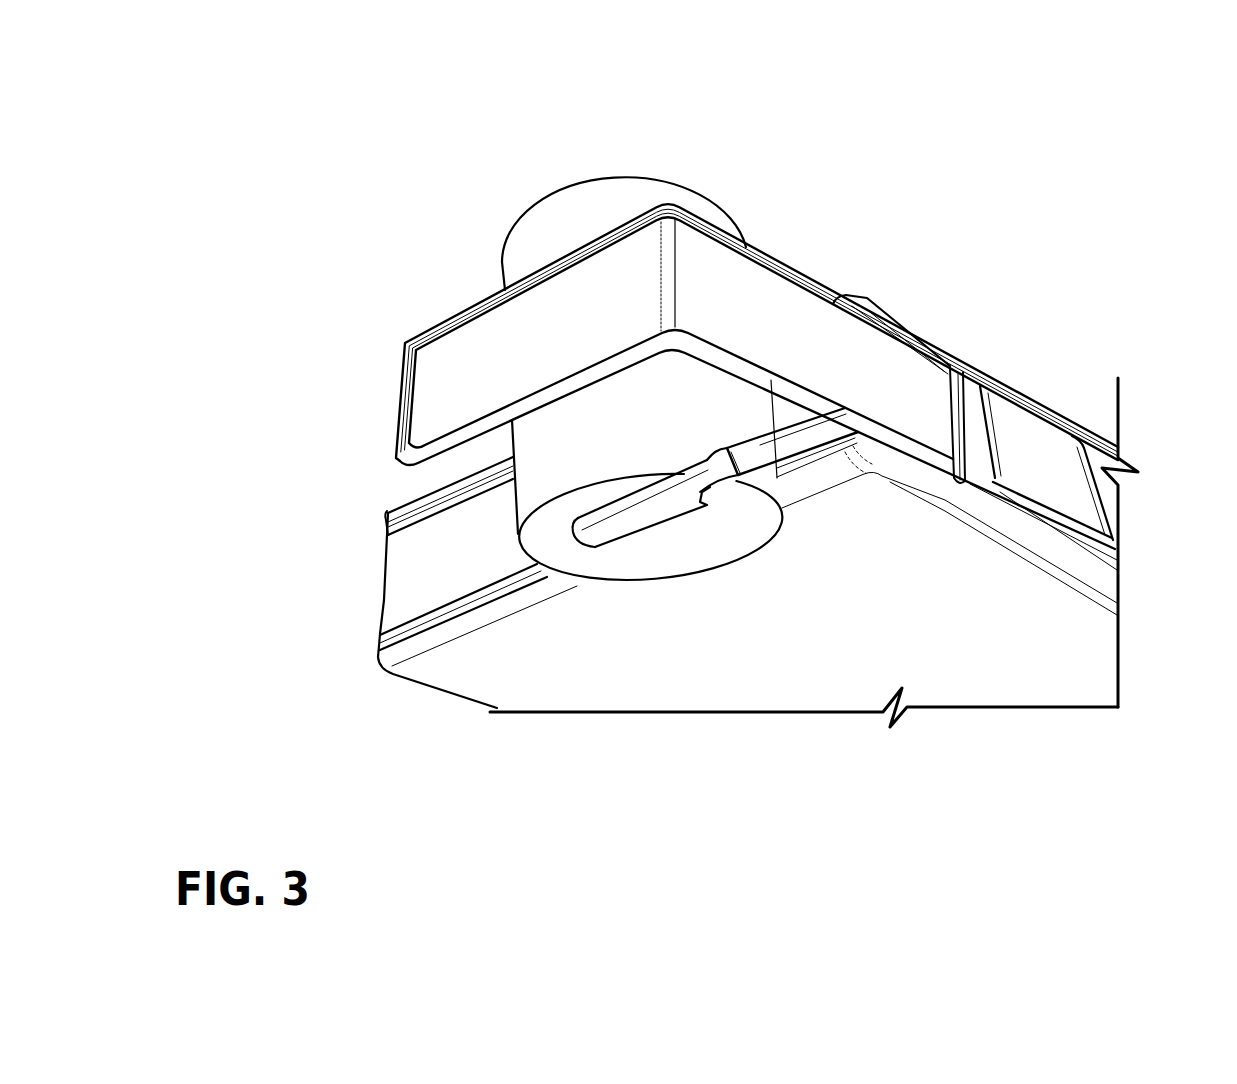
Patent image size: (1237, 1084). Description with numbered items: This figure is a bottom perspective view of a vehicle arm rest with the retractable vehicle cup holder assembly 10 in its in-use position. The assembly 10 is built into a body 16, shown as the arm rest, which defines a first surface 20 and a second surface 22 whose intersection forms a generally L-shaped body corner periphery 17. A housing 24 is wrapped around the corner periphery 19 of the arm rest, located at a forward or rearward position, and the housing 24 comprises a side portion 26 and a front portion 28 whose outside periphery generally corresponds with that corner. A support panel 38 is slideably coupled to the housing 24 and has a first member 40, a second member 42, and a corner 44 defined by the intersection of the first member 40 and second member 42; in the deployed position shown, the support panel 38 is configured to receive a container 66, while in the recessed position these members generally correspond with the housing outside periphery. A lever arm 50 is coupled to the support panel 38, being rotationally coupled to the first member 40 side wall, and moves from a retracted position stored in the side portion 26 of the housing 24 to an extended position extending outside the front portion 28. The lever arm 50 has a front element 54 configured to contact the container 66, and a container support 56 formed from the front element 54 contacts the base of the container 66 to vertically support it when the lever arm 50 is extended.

The vehicle cup holder assembly 10 is at (801, 191).
The body 16 is at (1090, 673).
The body corner periphery 17 is at (928, 455).
The corner periphery 19 is at (931, 444).
The first surface 20 is at (1090, 574).
The second surface 22 is at (840, 462).
The housing 24 is at (953, 487).
The side portion 26 is at (997, 485).
The front portion 28 is at (786, 425).
The support panel 38 is at (474, 335).
The first member 40 is at (896, 460).
The second member 42 is at (407, 403).
The corner 44 is at (670, 243).
The lever arm 50 is at (803, 440).
The front element 54 is at (710, 478).
The container support 56 is at (603, 537).
The container 66 is at (733, 557).